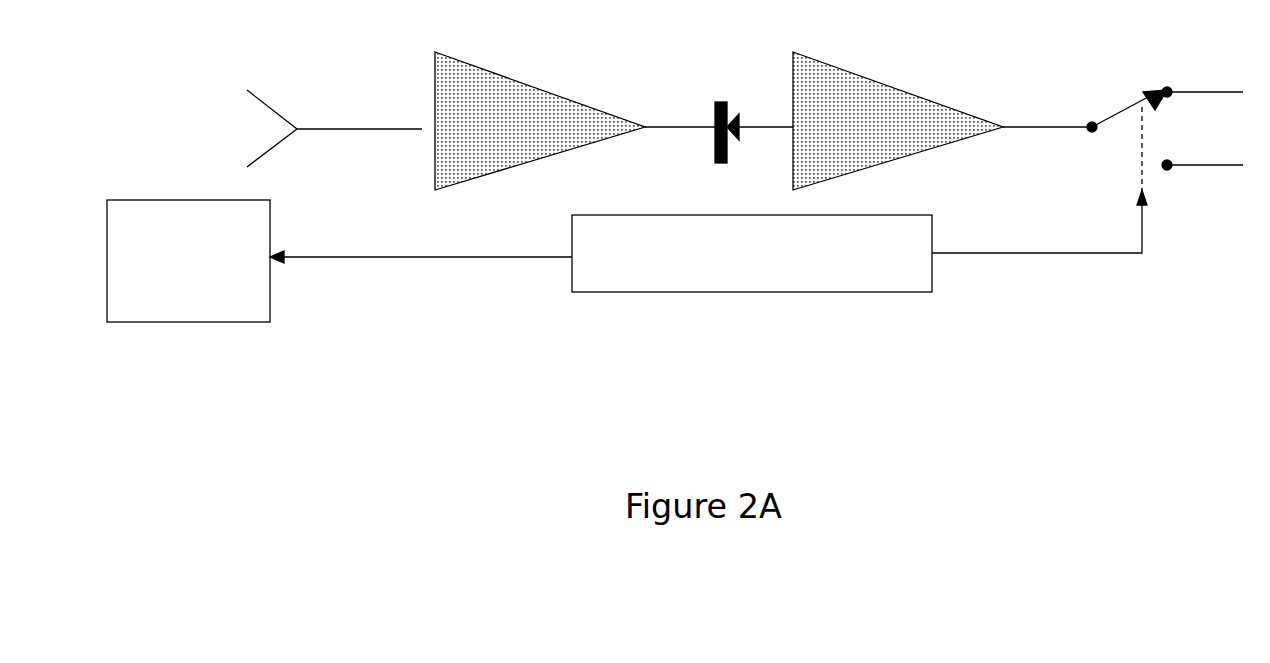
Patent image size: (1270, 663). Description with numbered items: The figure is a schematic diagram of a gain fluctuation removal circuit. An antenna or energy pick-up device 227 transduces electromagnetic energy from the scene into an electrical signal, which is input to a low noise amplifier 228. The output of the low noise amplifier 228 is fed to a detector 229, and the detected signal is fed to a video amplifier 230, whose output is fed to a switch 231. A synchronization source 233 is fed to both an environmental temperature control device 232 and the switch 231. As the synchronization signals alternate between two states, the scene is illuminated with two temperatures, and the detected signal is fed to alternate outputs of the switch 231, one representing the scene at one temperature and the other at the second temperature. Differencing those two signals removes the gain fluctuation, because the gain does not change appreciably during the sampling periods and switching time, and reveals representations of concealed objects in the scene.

The antenna 227 is at (260, 102).
The low noise amplifier 228 is at (582, 100).
The detector 229 is at (727, 91).
The video amplifier 230 is at (954, 113).
The switch 231 is at (1087, 147).
The environmental temperature control device 232 is at (240, 322).
The synchronization source 233 is at (583, 292).